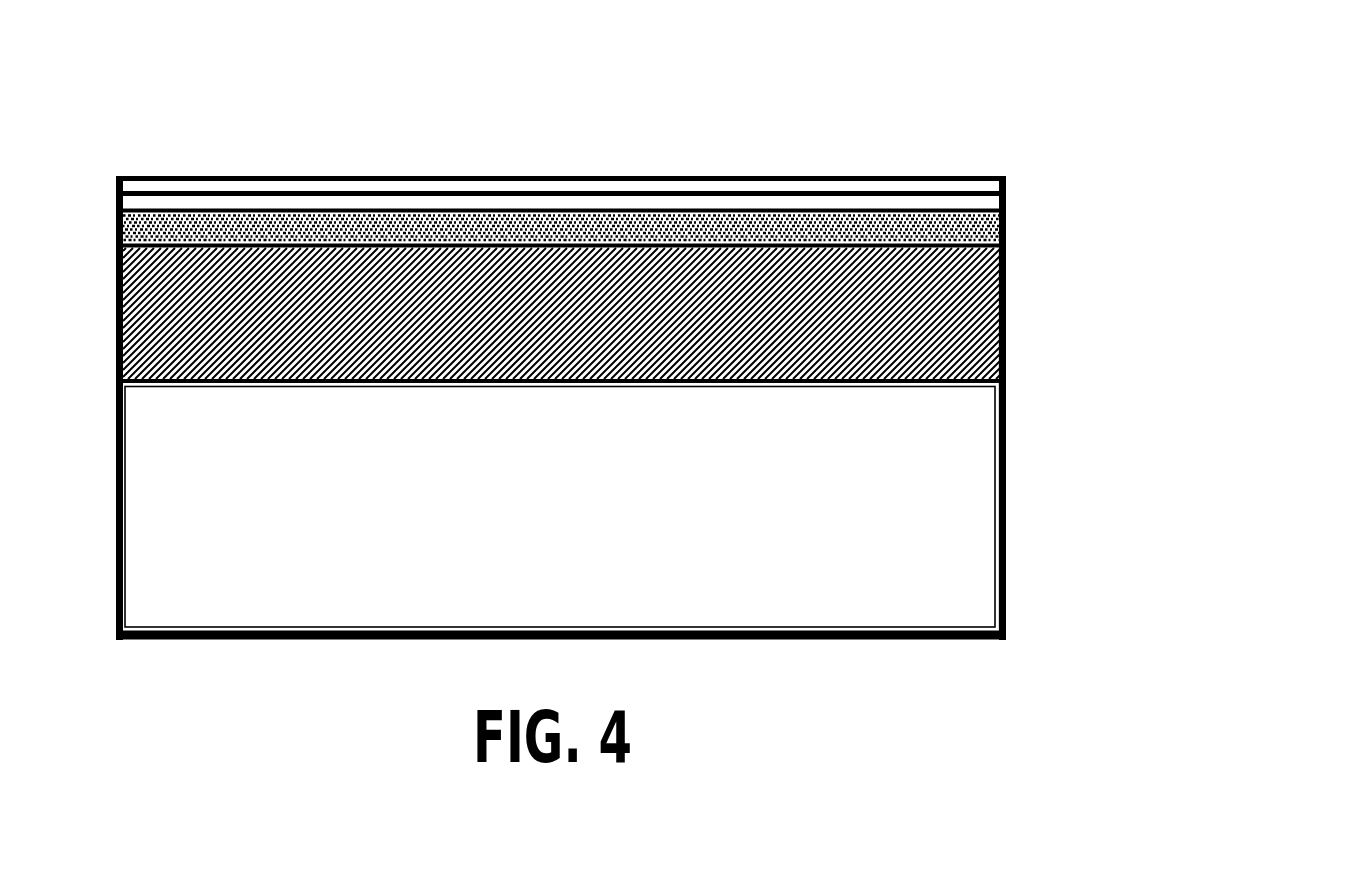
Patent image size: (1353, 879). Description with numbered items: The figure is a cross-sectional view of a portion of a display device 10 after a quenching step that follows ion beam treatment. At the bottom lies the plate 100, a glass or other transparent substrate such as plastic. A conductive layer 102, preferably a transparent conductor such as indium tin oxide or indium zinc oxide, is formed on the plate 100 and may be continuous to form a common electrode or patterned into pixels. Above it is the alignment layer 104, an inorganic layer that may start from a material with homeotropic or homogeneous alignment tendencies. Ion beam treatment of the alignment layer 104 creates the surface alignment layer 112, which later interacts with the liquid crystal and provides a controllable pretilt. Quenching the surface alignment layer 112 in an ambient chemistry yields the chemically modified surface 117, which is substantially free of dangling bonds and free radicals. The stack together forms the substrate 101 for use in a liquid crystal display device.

The display device 10 is at (1043, 137).
The plate 100 is at (1006, 478).
The substrate 101 is at (1183, 172).
The conductive layer 102 is at (1006, 342).
The alignment layer 104 is at (1013, 248).
The surface alignment layer 112 is at (118, 204).
The chemically modified surface 117 is at (388, 177).